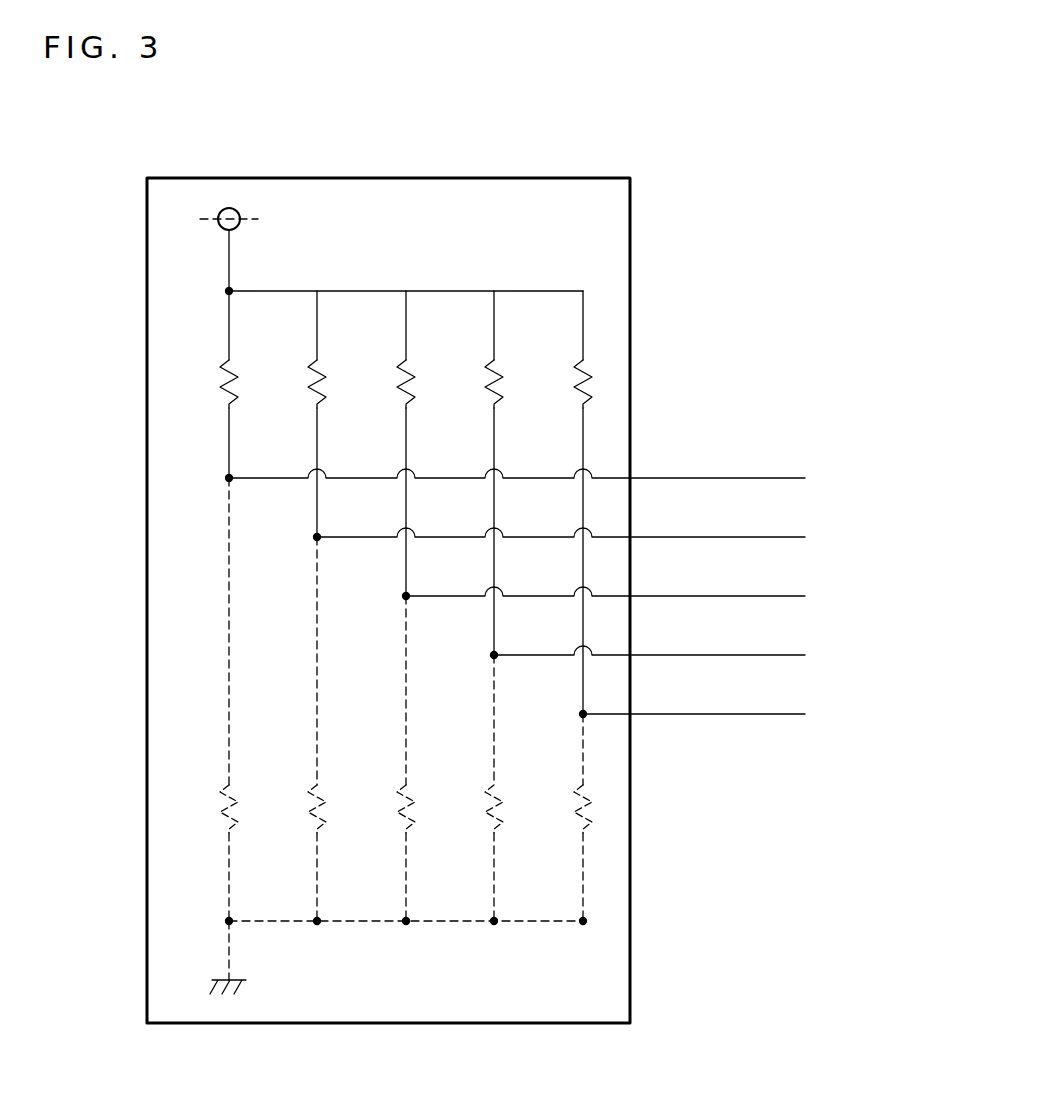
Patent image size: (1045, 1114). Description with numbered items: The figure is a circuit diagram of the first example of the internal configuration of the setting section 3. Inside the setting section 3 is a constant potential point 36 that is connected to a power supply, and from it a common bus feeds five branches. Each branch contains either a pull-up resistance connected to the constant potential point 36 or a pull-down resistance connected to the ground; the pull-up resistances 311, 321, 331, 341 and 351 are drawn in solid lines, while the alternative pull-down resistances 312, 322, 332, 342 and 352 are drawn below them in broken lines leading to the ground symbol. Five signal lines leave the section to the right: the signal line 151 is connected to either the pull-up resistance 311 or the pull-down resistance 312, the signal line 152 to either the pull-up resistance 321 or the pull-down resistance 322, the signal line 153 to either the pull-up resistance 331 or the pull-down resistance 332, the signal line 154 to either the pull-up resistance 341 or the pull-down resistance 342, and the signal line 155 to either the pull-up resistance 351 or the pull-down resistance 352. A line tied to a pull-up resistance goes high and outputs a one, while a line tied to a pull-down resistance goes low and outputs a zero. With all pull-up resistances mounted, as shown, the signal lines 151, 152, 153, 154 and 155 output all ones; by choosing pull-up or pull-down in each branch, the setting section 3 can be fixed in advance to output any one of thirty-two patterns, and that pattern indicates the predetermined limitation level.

The setting section 3 is at (510, 177).
The constant potential point 36 is at (241, 218).
The pull-up resistance 311 is at (221, 381).
The pull-up resistance 321 is at (309, 381).
The pull-up resistance 331 is at (398, 381).
The pull-up resistance 341 is at (487, 381).
The pull-up resistance 351 is at (575, 381).
The pull-down resistance 312 is at (220, 804).
The pull-down resistance 322 is at (309, 804).
The pull-down resistance 332 is at (397, 804).
The pull-down resistance 342 is at (485, 804).
The pull-down resistance 352 is at (574, 804).
The signal line 151 is at (706, 478).
The signal line 152 is at (706, 537).
The signal line 153 is at (706, 596).
The signal line 154 is at (706, 655).
The signal line 155 is at (706, 714).